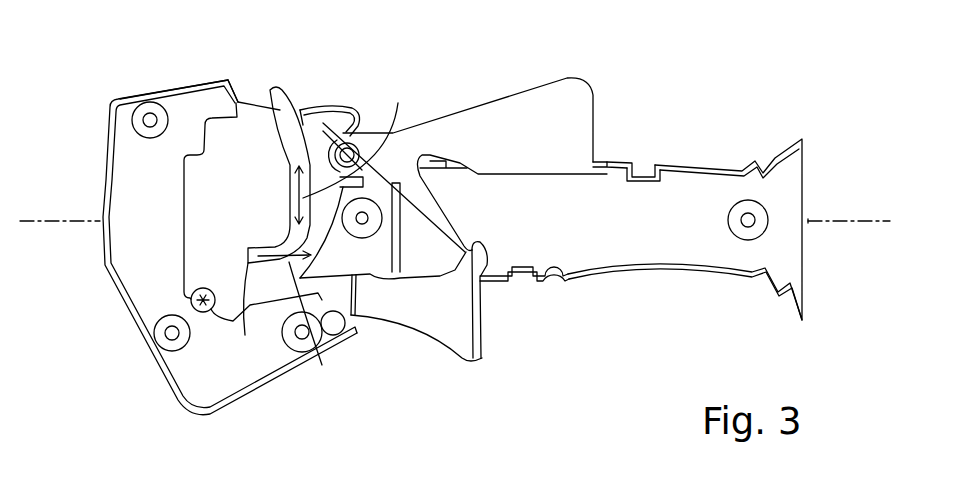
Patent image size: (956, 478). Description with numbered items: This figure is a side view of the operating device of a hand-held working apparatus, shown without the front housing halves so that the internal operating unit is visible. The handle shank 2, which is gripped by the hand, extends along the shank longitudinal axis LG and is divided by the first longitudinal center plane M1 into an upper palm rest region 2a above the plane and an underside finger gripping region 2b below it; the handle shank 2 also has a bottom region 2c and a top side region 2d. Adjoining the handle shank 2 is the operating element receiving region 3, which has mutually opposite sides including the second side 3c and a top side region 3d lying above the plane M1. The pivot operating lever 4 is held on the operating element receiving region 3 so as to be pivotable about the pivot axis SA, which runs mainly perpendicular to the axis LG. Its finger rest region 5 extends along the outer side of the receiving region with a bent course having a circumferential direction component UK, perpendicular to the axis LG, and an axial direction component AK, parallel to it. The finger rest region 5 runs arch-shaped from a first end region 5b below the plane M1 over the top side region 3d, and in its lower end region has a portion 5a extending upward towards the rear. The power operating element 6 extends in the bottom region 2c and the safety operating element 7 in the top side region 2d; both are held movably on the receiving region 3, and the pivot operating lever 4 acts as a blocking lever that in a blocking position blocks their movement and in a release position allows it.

The handle shank 2 is at (645, 265).
The upper palm rest region 2a is at (626, 162).
The underside finger gripping region 2b is at (572, 283).
The bottom region 2c is at (487, 287).
The top side region 2d is at (603, 160).
The operating element receiving region 3 is at (180, 373).
The second side 3c is at (193, 80).
The top side region 3d is at (228, 86).
The pivot operating lever 4 is at (262, 104).
The finger rest region 5 is at (286, 96).
The portion extending upward towards the rear 5a is at (318, 355).
The first end region 5b is at (245, 335).
The power operating element 6 is at (447, 333).
The safety operating element 7 is at (532, 107).
The circumferential direction component UK is at (359, 138).
The axial direction component AK is at (268, 263).
The pivot axis SA is at (191, 302).
The shank longitudinal axis LG is at (850, 220).
The first longitudinal center plane M1 is at (830, 221).